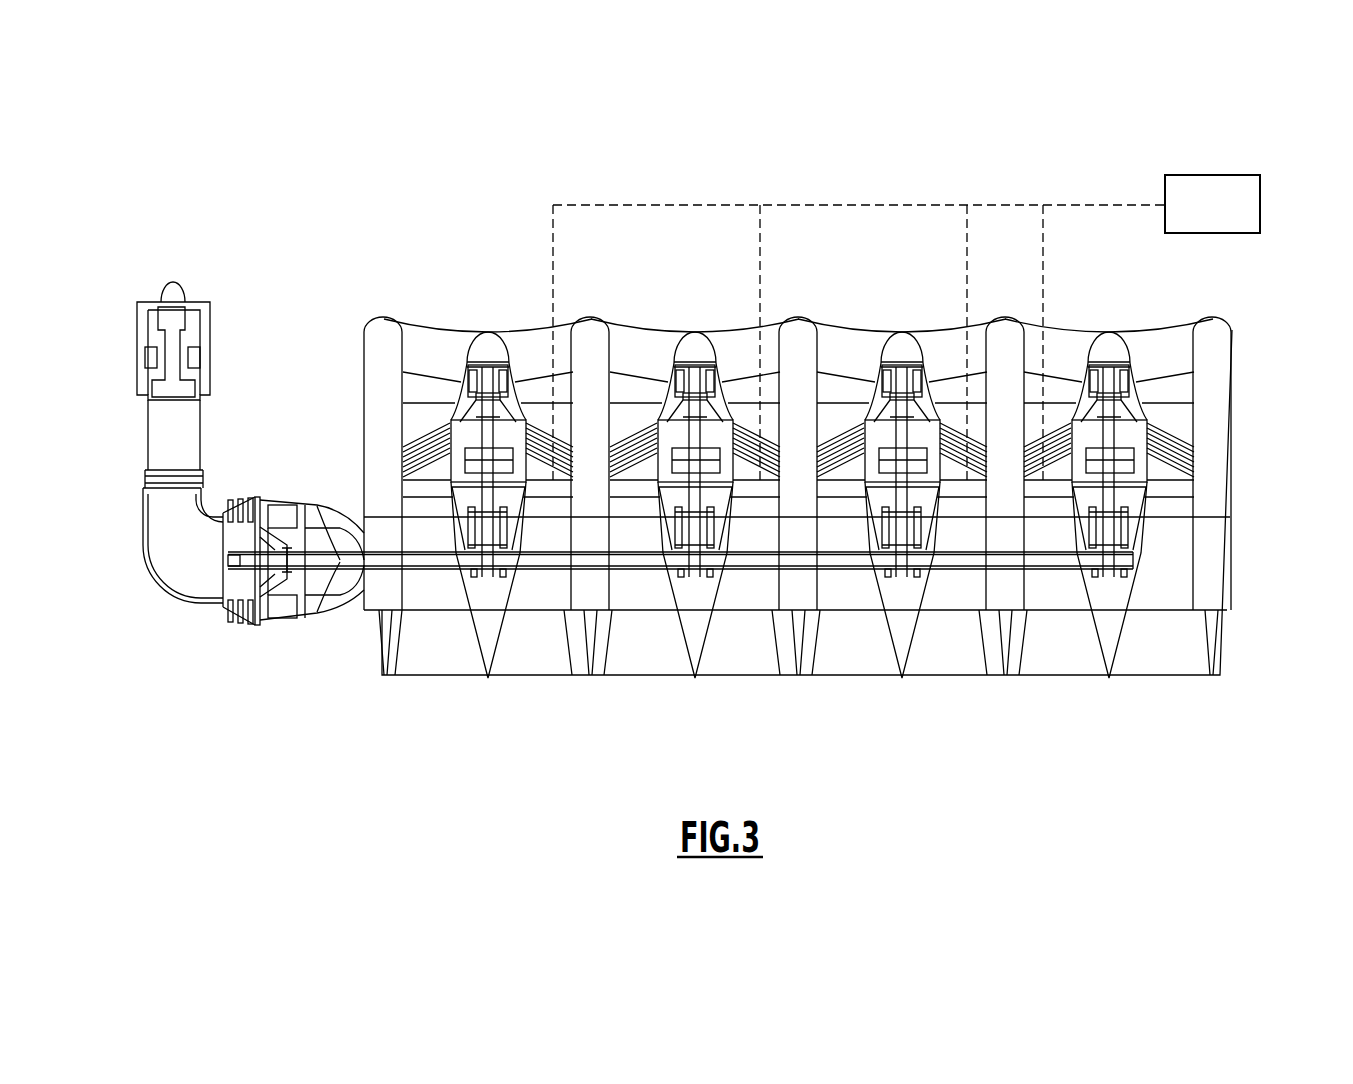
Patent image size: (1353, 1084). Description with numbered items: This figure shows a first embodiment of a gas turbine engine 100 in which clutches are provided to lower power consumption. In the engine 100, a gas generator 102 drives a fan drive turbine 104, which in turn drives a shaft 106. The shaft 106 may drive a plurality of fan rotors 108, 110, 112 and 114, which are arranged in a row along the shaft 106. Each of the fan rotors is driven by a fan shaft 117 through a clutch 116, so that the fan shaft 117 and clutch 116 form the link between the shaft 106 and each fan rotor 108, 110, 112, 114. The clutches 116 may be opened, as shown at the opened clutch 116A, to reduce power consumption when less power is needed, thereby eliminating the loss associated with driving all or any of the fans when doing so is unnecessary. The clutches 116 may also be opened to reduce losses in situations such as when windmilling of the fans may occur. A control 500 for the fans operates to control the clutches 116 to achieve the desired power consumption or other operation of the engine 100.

The engine 100 is at (713, 192).
The gas generator 102 is at (220, 347).
The fan drive turbine 104 is at (249, 612).
The shaft 106 is at (416, 562).
The fan rotor 108 is at (445, 388).
The fan rotor 110 is at (633, 388).
The fan rotor 112 is at (838, 388).
The fan rotor 114 is at (1058, 390).
The clutch 116 is at (530, 478).
The opened clutch 116A is at (1137, 457).
The fan shaft 117 is at (486, 531).
The control 500 is at (1190, 218).